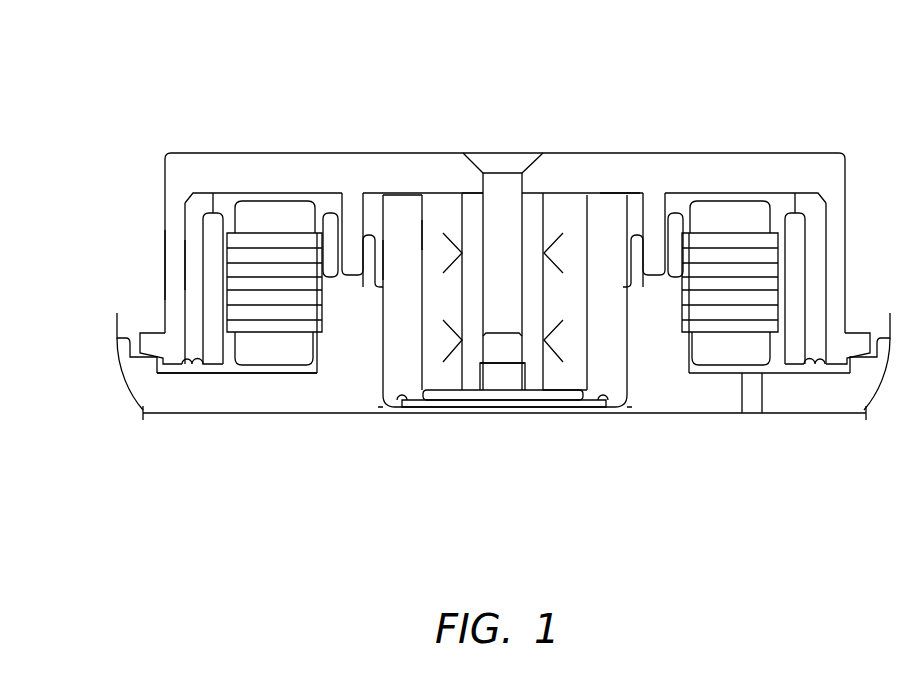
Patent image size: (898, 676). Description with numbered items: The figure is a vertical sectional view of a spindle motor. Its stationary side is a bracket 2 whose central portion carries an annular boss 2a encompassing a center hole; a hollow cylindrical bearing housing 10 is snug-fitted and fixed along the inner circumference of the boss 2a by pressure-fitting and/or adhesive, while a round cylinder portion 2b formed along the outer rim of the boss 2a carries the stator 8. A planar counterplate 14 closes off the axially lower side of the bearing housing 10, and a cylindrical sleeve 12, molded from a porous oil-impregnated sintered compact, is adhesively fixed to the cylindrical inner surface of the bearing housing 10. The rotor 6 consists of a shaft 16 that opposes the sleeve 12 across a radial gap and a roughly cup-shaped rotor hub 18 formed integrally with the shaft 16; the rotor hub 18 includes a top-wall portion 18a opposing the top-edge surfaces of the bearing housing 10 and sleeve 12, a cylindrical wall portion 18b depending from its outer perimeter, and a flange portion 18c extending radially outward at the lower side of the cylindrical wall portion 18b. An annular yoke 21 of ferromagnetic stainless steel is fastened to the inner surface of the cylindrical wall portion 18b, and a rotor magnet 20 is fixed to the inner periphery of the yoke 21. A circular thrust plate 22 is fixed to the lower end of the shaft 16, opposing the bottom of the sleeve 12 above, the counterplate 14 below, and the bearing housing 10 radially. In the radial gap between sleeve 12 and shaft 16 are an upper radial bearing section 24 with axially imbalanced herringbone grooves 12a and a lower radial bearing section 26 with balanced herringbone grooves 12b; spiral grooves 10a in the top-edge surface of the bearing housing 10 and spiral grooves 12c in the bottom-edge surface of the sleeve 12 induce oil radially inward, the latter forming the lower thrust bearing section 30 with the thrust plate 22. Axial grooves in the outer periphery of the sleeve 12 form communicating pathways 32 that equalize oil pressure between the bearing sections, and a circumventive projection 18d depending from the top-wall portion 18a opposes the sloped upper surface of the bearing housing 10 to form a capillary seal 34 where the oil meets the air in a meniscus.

The bracket 2 is at (208, 393).
The annular boss 2a is at (290, 352).
The round cylinder portion 2b is at (677, 230).
The rotor 6 is at (538, 131).
The stator 8 is at (740, 222).
The bearing housing 10 is at (606, 207).
The spiral grooves 10a is at (410, 208).
The sleeve 12 is at (570, 300).
The herringbone grooves 12a is at (408, 207).
The herringbone grooves 12b is at (472, 280).
The spiral grooves 12c is at (364, 345).
The counterplate 14 is at (495, 388).
The shaft 16 is at (500, 235).
The rotor hub 18 is at (862, 264).
The top-wall portion 18a is at (610, 180).
The cylindrical wall portion 18b is at (170, 281).
The flange portion 18c is at (143, 332).
The circumventive projection 18d is at (353, 262).
The rotor magnet 20 is at (210, 377).
The annular yoke 21 is at (197, 287).
The thrust plate 22 is at (557, 397).
The upper radial bearing section 24 is at (549, 244).
The lower radial bearing section 26 is at (557, 340).
The lower thrust bearing section 30 is at (448, 375).
The communicating pathways 32 is at (420, 233).
The capillary seal 34 is at (383, 258).